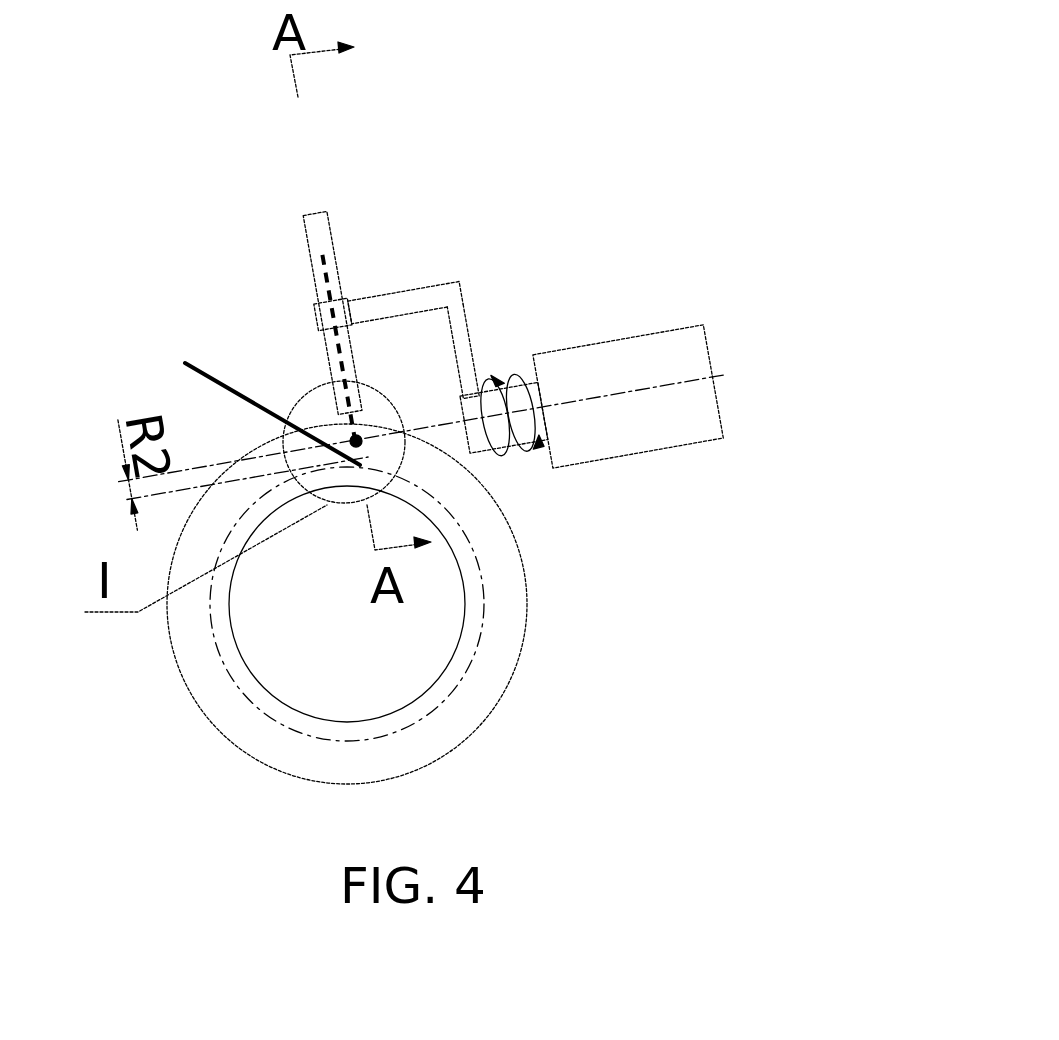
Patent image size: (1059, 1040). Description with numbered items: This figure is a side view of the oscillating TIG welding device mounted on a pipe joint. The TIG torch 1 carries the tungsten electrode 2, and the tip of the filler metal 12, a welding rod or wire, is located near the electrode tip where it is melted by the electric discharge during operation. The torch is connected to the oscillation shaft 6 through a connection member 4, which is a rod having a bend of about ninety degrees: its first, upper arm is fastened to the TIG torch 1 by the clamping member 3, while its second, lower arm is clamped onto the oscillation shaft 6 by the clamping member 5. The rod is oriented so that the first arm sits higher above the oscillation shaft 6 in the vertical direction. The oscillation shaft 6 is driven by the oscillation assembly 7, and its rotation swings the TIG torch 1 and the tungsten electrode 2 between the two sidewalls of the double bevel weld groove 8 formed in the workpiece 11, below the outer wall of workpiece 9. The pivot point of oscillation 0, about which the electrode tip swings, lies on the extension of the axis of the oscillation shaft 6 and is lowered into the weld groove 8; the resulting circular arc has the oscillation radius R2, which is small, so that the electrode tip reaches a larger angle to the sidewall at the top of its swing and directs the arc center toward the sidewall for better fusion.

The pivot point of oscillation 0 is at (297, 362).
The TIG torch 1 is at (310, 278).
The tungsten electrode 2 is at (340, 225).
The clamping member 3 is at (404, 221).
The connection member 4 is at (459, 259).
The clamping member 5 is at (520, 286).
The oscillation shaft 6 is at (564, 287).
The oscillation assembly 7 is at (628, 293).
The double bevel weld groove 8 is at (464, 604).
The outer wall of workpiece 9 is at (442, 604).
The workpiece 11 is at (485, 604).
The filler metal 12 is at (224, 291).